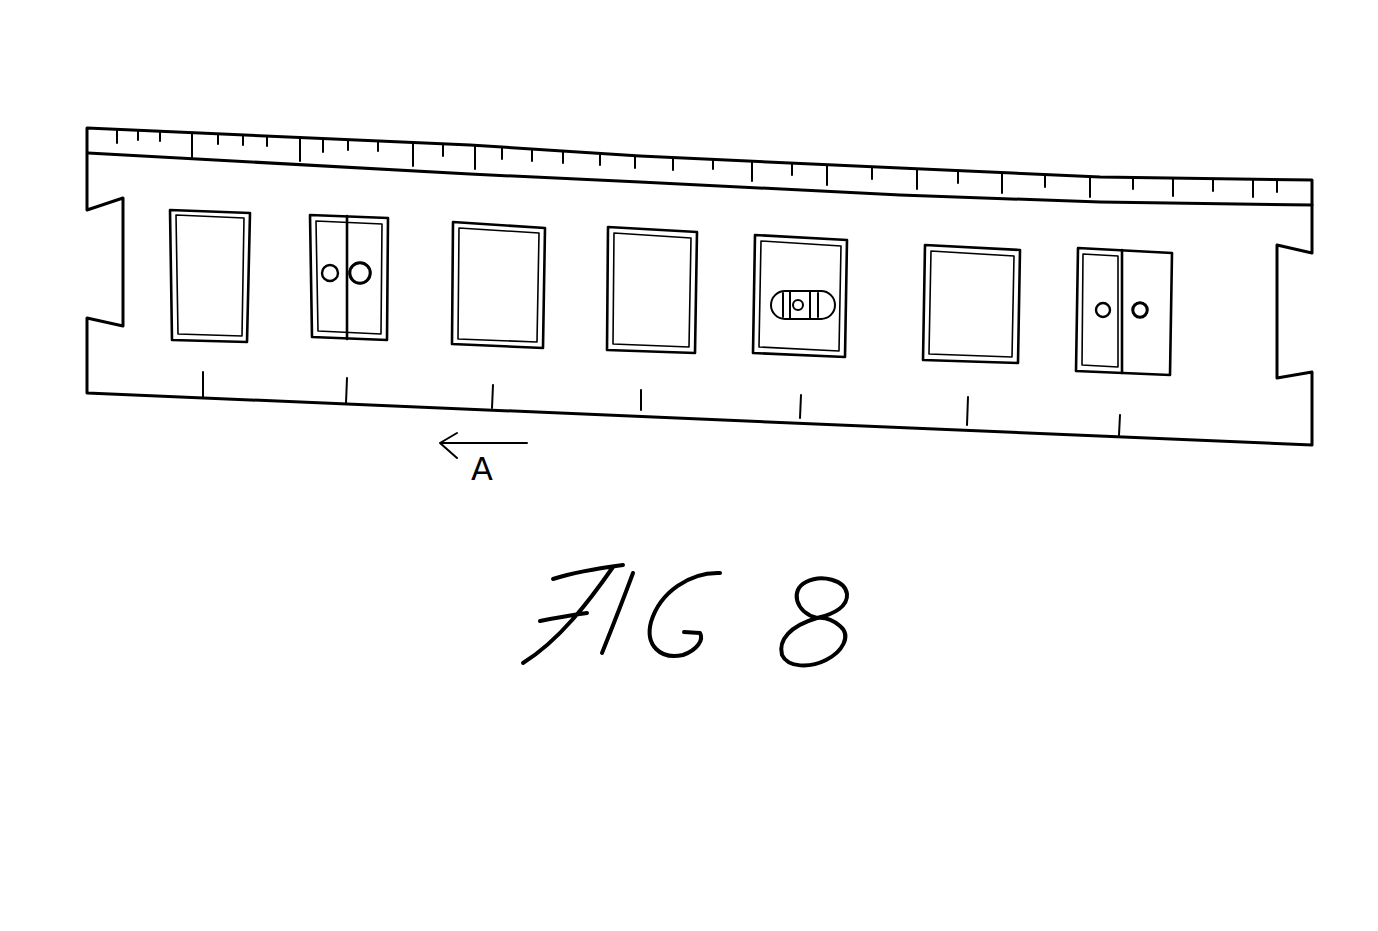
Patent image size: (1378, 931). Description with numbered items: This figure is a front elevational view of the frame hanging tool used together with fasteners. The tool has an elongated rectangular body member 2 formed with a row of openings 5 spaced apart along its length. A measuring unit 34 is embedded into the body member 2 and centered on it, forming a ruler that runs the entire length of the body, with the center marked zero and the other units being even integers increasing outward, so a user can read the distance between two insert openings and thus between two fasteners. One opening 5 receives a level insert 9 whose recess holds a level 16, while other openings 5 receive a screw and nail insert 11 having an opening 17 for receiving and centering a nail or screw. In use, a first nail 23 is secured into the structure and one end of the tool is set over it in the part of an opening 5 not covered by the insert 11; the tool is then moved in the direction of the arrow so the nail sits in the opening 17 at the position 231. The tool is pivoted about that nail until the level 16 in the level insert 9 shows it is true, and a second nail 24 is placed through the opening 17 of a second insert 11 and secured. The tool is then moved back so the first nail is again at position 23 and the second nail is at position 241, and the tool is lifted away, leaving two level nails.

The body member 2 is at (1287, 430).
The openings 5 is at (322, 322).
The level insert 9 is at (815, 358).
The screw and nail insert 11 is at (362, 345).
The level 16 is at (797, 320).
The opening 17 is at (366, 263).
The first nail 23 is at (331, 264).
The first nail position 231 is at (369, 267).
The second nail 24 is at (1144, 302).
The second nail position 241 is at (1104, 302).
The measuring unit 34 is at (970, 415).